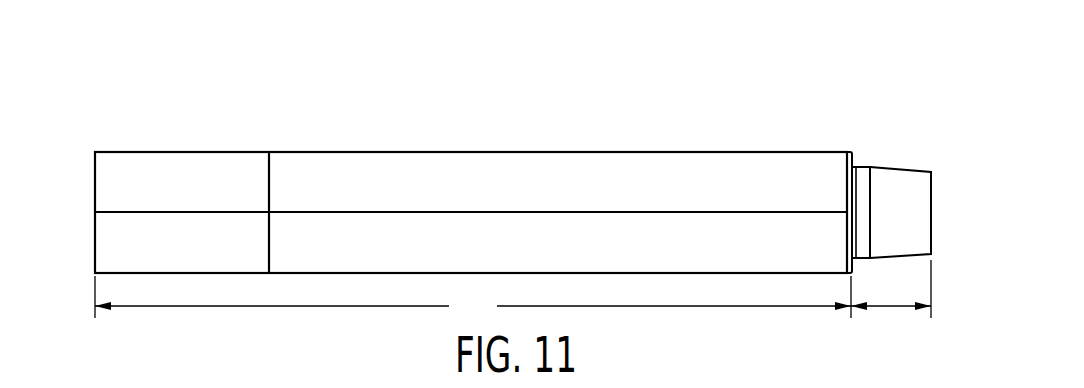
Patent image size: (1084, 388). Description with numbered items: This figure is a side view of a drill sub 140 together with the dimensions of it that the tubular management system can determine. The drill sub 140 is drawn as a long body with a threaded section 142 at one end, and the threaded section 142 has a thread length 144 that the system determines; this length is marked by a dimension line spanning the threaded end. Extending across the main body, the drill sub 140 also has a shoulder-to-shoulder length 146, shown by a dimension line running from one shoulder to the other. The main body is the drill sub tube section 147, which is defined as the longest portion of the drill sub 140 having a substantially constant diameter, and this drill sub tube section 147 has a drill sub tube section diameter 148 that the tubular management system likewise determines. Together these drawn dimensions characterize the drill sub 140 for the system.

The drill sub 140 is at (843, 77).
The threaded section 142 is at (897, 155).
The thread length 144 is at (895, 307).
The shoulder-to-shoulder length 146 is at (473, 299).
The drill sub tube section 147 is at (475, 178).
The drill sub tube section diameter 148 is at (271, 183).